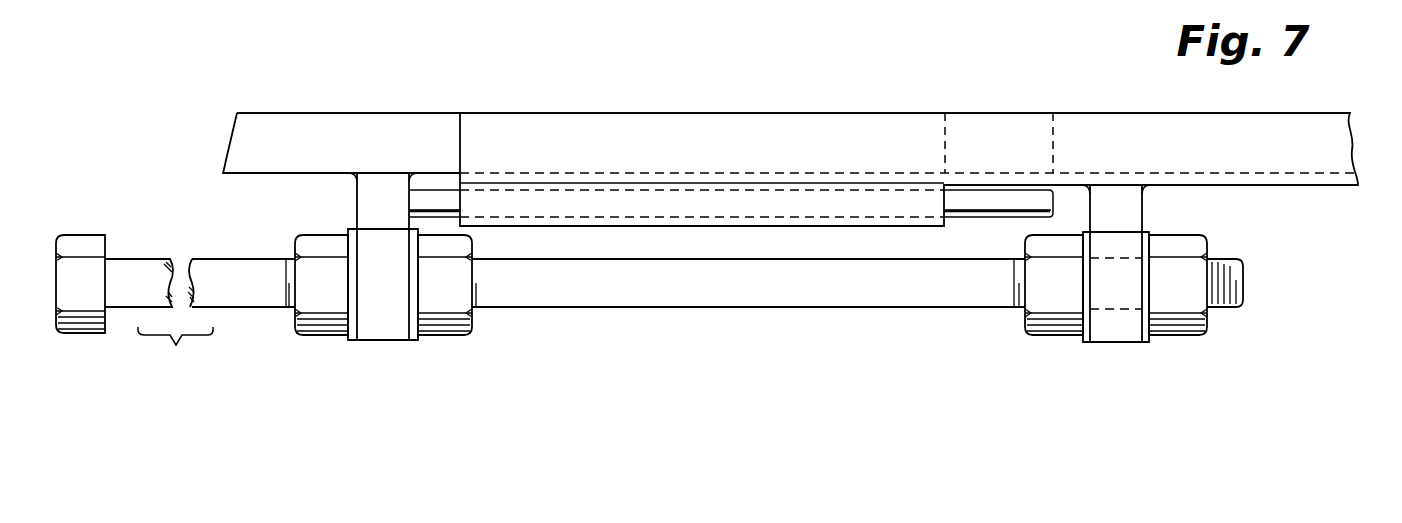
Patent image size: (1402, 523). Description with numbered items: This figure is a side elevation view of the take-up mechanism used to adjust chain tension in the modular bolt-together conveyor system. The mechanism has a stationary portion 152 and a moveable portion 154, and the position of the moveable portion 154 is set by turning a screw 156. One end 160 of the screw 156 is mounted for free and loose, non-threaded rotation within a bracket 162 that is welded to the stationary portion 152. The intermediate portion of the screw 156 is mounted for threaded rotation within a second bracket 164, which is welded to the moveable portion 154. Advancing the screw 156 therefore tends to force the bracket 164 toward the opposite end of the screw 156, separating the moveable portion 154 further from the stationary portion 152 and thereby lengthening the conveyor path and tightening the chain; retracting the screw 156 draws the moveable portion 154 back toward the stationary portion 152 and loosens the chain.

The stationary portion 152 is at (1292, 104).
The moveable portion 154 is at (1000, 106).
The screw 156 is at (818, 300).
The end of screw 160 is at (1227, 280).
The bracket 162 is at (1105, 332).
The bracket 164 is at (393, 335).